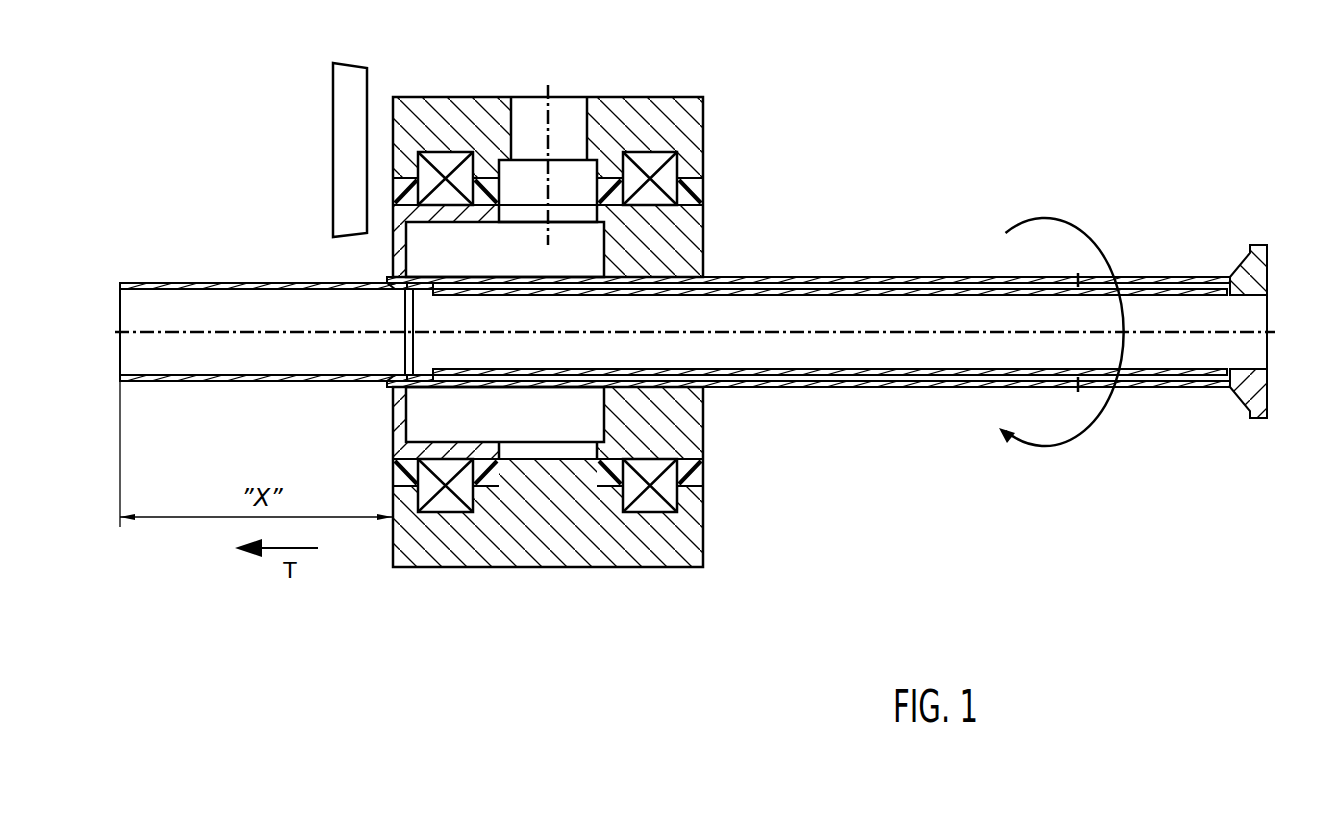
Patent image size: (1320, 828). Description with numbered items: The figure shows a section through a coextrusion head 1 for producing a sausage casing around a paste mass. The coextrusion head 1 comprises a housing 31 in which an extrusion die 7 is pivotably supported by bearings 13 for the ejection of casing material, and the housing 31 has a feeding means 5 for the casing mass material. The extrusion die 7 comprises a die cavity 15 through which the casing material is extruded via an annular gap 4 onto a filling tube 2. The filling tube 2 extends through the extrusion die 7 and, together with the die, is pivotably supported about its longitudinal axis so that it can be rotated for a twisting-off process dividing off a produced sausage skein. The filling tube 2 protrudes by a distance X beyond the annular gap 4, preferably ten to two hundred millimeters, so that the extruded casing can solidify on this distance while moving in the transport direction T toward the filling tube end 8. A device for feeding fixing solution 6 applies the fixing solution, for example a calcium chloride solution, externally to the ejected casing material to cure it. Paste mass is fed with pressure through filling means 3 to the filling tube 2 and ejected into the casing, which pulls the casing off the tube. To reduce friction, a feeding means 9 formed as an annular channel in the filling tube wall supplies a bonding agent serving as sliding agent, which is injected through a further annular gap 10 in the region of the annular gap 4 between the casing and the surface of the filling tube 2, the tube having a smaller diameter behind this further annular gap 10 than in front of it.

The coextrusion head 1 is at (509, 80).
The filling tube 2 is at (793, 277).
The filling means 3 is at (1267, 313).
The annular gap 4 is at (392, 272).
The feeding means 5 is at (572, 112).
The device for feeding fixing solution 6 is at (340, 83).
The extrusion die 7 is at (695, 413).
The filling tube end 8 is at (120, 282).
The feeding means for bonding agent 9 is at (946, 283).
The further annular gap 10 is at (392, 282).
The bearings 13 is at (651, 506).
The die cavity 15 is at (531, 422).
The housing 31 is at (434, 97).